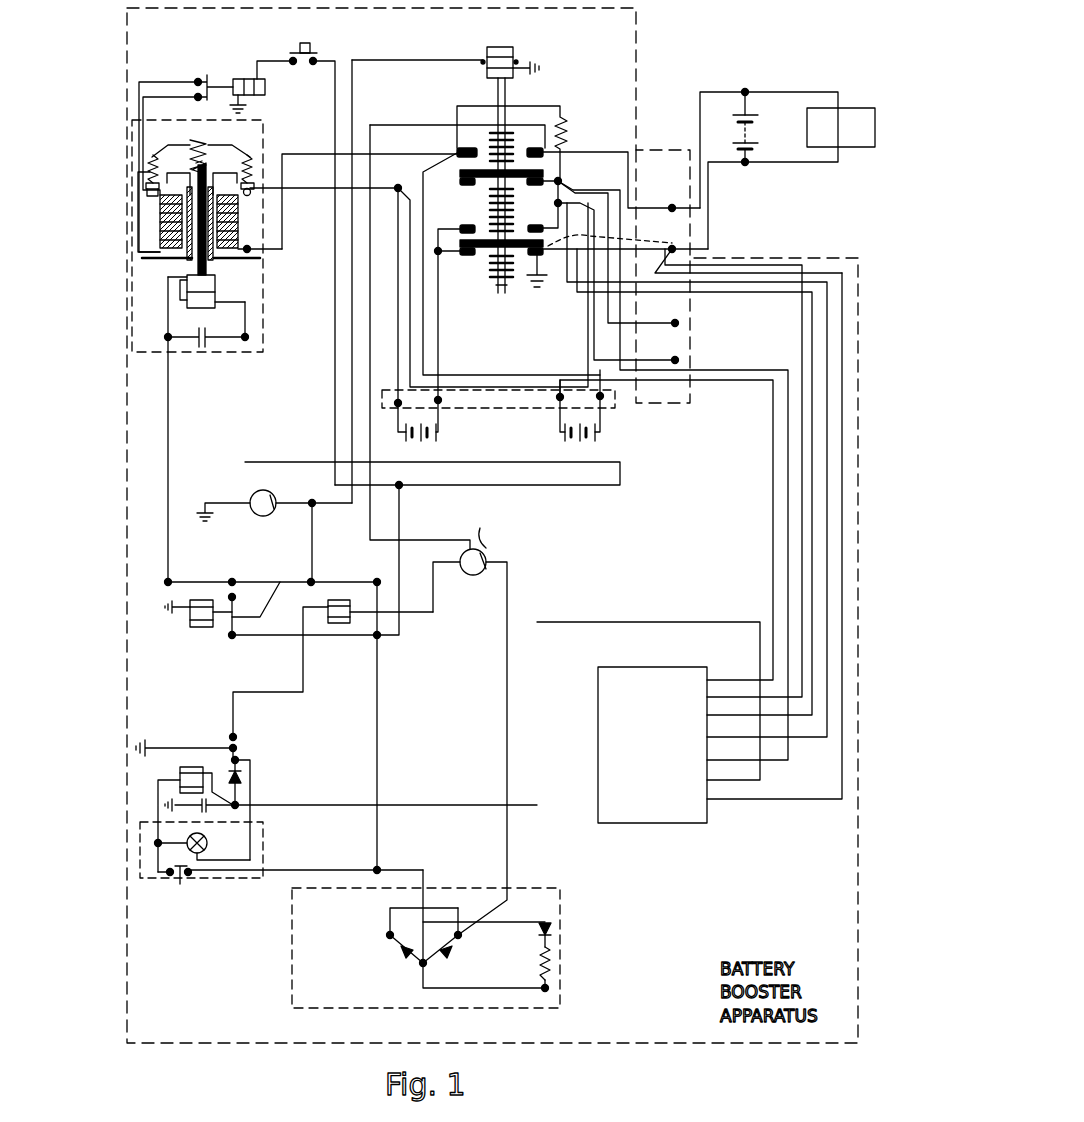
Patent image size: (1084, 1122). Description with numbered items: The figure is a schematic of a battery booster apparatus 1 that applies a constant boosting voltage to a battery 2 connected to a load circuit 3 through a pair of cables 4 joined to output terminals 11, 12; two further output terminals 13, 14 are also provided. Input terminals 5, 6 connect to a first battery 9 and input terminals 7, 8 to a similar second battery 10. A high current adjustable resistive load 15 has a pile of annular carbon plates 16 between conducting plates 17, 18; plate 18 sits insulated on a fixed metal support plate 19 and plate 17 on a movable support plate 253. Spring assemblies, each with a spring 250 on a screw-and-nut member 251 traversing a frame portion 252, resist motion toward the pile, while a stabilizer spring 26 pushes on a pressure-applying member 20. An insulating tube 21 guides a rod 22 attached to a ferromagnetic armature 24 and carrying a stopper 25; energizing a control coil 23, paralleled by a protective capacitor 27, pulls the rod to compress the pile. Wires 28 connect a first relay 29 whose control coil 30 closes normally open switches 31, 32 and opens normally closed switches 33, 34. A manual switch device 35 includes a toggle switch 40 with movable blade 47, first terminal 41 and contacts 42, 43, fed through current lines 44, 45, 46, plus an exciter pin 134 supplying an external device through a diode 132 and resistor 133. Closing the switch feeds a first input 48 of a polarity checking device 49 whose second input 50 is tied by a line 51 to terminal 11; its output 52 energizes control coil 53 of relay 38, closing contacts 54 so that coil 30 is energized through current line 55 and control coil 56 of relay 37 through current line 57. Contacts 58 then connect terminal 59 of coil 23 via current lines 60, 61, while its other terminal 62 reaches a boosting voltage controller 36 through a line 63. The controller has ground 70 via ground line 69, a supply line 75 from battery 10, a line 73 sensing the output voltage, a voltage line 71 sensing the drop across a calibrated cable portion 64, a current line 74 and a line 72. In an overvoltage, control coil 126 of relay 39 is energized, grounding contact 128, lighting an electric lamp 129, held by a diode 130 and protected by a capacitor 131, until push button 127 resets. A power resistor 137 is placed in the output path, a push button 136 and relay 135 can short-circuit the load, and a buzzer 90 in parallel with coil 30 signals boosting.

The battery booster apparatus 1 is at (731, 1042).
The battery 2 is at (744, 134).
The load circuit 3 is at (856, 108).
The pair of cables 4 is at (714, 188).
The input terminal 5 is at (599, 394).
The input terminal 6 is at (560, 394).
The input terminal 7 is at (396, 399).
The input terminal 8 is at (440, 396).
The first direct current voltage source 9 is at (574, 440).
The second voltage source 10 is at (422, 444).
The output terminal 11 is at (672, 207).
The output terminal 12 is at (672, 249).
The output terminal 13 is at (677, 325).
The output terminal 14 is at (677, 362).
The high current adjustable resistive load 15 is at (262, 134).
The pile of annular carbon plates 16 is at (256, 256).
The electrically conducting plate 17 is at (160, 192).
The electrically conducting plate 18 is at (247, 249).
The fixed metal support plate 19 is at (228, 268).
The movable pressure-applying member 20 is at (196, 140).
The electrically insulating tube 21 is at (241, 217).
The rod 22 is at (195, 272).
The control coil 23 is at (215, 290).
The ferromagnetic armature 24 is at (186, 294).
The stopper 25 is at (182, 148).
The stabilizer spring 26 is at (210, 150).
The protective capacitor 27 is at (205, 349).
The wires 28 is at (325, 200).
The first relay 29 is at (568, 73).
The control coil 30 is at (513, 56).
The normally open switch 31 is at (488, 152).
The normally open switch 32 is at (482, 232).
The normally closed switch 33 is at (528, 190).
The normally closed switch 34 is at (484, 254).
The manual switch device 35 is at (565, 890).
The boosting voltage controller 36 is at (680, 824).
The relay 37 is at (230, 572).
The relay 38 is at (342, 644).
The relay 39 is at (246, 753).
The single-pole double-throw toggle switch 40 is at (459, 965).
The first terminal 41 is at (388, 936).
The contact 42 is at (462, 938).
The contact 43 is at (394, 950).
The current line 44 is at (418, 868).
The current line 45 is at (374, 718).
The current line 46 is at (600, 486).
The movable blade 47 is at (422, 966).
The first input 48 is at (502, 552).
The polarity checking device 49 is at (482, 572).
The second input 50 is at (450, 552).
The line 51 is at (372, 328).
The output 52 is at (444, 580).
The control coil 53 is at (326, 608).
The normally open contacts 54 is at (380, 580).
The current line 55 is at (351, 92).
The control coil 56 is at (190, 618).
The current line 57 is at (266, 596).
The normally open contacts 58 is at (234, 580).
The terminal 59 is at (168, 290).
The current line 60 is at (168, 456).
The current line 61 is at (272, 638).
The terminal 62 is at (236, 302).
The line 63 is at (712, 698).
The portion of cable 64 is at (573, 239).
The ground line 69 is at (712, 718).
The ground 70 is at (534, 278).
The voltage line 71 is at (740, 801).
The line 72 is at (708, 800).
The line 73 is at (740, 762).
The current line 74 is at (712, 741).
The supply line 75 is at (726, 680).
The buzzer 90 is at (252, 498).
The control coil 126 is at (195, 766).
The push button 127 is at (180, 886).
The contact 128 is at (250, 762).
The electric lamp 129 is at (207, 840).
The diode 130 is at (242, 783).
The capacitor 131 is at (188, 806).
The diode 132 is at (557, 924).
The resistor 133 is at (557, 963).
The exciter pin 134 is at (553, 989).
The relay 135 is at (252, 72).
The push button 136 is at (311, 50).
The low-resistance power resistor 137 is at (569, 128).
The spring 250 is at (146, 170).
The screw-and-nut member 251 is at (148, 194).
The frame portion 252 is at (146, 188).
The movable metal support plate 253 is at (253, 187).